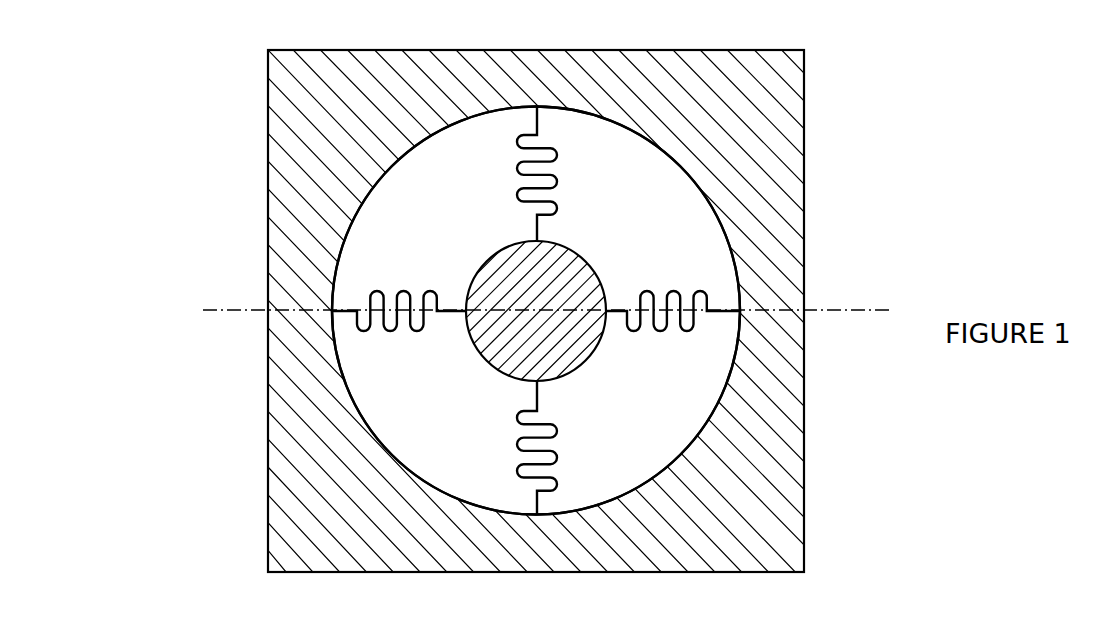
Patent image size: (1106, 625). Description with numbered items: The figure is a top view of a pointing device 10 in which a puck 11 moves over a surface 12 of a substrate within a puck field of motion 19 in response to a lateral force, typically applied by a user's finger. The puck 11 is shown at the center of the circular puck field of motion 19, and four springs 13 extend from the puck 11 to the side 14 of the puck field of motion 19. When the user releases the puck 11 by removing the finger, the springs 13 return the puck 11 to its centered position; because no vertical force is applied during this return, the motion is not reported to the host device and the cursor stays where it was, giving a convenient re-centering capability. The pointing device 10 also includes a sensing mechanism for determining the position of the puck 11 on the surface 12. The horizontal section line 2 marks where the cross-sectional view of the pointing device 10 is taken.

The pointing device 10 is at (116, 121).
The puck 11 is at (575, 262).
The surface 12 is at (638, 455).
The springs 13 is at (691, 332).
The side of the puck field of motion 14 is at (796, 490).
The puck field of motion 19 is at (684, 214).
The line 2- 2 is at (216, 322).